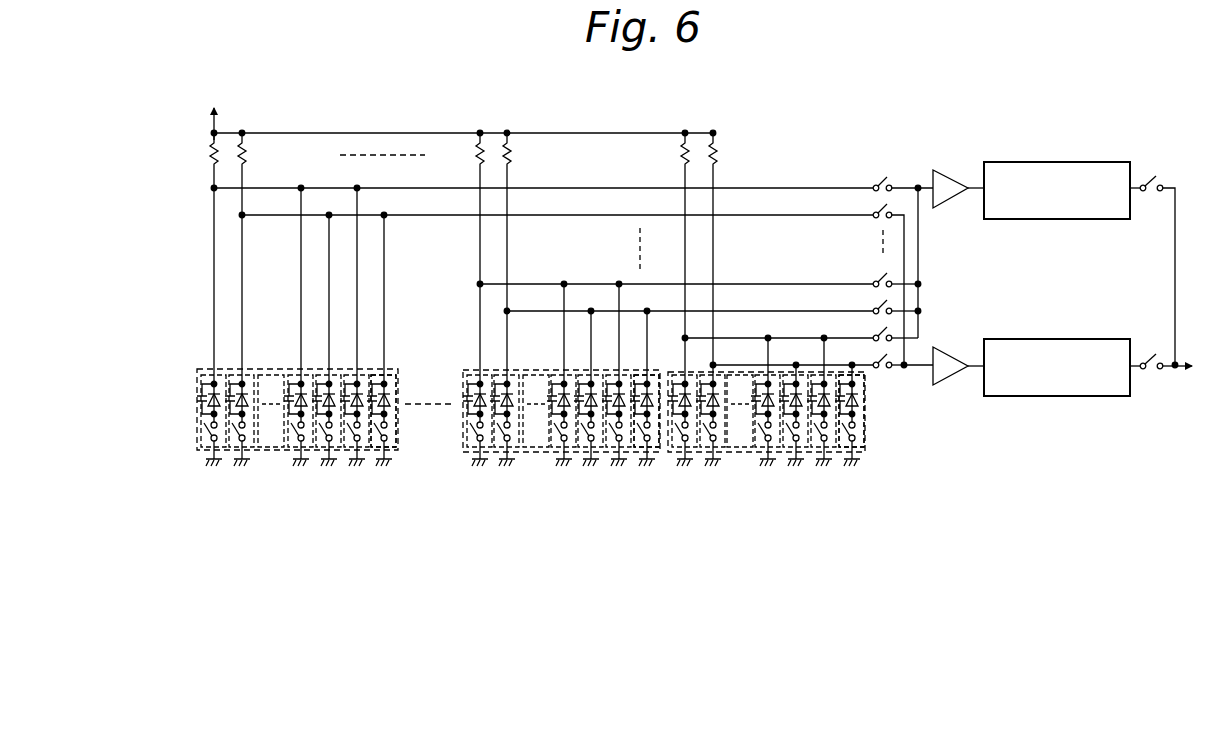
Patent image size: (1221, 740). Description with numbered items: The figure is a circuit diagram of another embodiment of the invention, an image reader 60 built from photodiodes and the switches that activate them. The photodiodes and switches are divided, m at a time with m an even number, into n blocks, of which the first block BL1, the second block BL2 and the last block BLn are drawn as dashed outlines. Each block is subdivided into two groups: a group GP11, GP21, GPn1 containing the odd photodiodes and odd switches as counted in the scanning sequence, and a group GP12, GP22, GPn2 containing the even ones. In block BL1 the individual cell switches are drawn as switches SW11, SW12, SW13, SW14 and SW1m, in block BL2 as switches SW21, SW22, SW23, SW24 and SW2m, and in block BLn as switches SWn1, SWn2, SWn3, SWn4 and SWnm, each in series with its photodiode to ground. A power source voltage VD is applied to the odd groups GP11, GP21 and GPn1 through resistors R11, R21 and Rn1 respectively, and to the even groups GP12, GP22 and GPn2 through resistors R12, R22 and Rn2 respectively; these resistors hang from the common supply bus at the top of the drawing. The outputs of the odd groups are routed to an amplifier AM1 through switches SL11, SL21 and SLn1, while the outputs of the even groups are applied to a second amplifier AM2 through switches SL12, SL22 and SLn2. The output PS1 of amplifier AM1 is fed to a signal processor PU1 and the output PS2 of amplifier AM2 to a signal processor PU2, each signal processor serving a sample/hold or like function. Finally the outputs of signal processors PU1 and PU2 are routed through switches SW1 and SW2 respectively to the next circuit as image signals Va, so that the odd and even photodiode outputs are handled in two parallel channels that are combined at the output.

The image reader 60 is at (866, 110).
The power source voltage VD is at (215, 110).
The image signals Va is at (1179, 381).
The resistor Rn2 is at (222, 150).
The resistor Rn1 is at (247, 152).
The resistor R22 is at (477, 155).
The resistor R21 is at (511, 152).
The resistor R12 is at (683, 158).
The resistor R11 is at (717, 150).
The switch SLn2 is at (873, 185).
The switch SLn1 is at (873, 212).
The switch SL22 is at (873, 281).
The switch SL21 is at (873, 308).
The switch SL12 is at (873, 335).
The switch SL11 is at (874, 362).
The amplifier AM2 is at (948, 168).
The amplifier AM1 is at (948, 345).
The signal processor PU2 is at (1048, 161).
The signal processor PU1 is at (1048, 338).
The output of the amplifier AM2 PS2 is at (976, 192).
The output of the amplifier AM1 PS1 is at (976, 370).
The switch SW2 is at (1150, 178).
The switch SW1 is at (1150, 356).
The block BLn is at (264, 366).
The block BL2 is at (534, 367).
The block BL1 is at (732, 369).
The group GPn1 is at (398, 382).
The group GPn2 is at (258, 455).
The group GP21 is at (658, 380).
The group GP22 is at (518, 455).
The group GP11 is at (866, 416).
The group GP12 is at (725, 455).
The switch SWnm is at (204, 422).
The switch SWn4 is at (291, 422).
The switch SWn3 is at (319, 422).
The switch SWn2 is at (347, 422).
The switch SWn1 is at (374, 422).
The switch SW2m is at (470, 422).
The switch SW24 is at (554, 422).
The switch SW23 is at (581, 422).
The switch SW22 is at (609, 422).
The switch SW21 is at (637, 422).
The switch SW1m is at (675, 422).
The switch SW14 is at (758, 422).
The switch SW13 is at (786, 422).
The switch SW12 is at (814, 422).
The switch SW11 is at (842, 422).